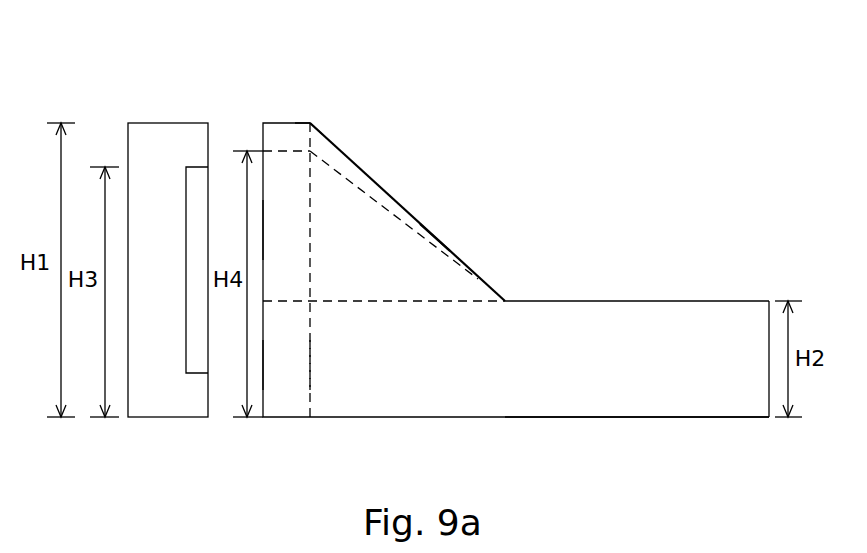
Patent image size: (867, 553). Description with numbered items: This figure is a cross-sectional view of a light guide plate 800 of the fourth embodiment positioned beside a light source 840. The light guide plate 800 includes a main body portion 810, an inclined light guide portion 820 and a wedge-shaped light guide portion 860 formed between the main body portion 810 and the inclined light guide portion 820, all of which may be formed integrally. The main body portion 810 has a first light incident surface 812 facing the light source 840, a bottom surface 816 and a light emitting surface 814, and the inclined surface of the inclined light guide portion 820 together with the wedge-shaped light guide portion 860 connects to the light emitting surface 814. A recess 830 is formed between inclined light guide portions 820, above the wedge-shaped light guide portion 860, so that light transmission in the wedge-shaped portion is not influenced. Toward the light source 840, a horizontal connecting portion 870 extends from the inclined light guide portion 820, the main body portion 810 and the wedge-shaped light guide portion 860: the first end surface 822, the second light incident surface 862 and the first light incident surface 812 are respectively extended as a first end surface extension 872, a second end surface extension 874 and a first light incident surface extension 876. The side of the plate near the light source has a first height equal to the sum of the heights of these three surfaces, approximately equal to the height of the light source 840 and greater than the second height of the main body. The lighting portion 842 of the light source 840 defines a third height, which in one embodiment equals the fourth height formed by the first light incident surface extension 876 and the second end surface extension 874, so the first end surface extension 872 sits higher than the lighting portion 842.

The light guide plate 800 is at (733, 198).
The main body portion 810 is at (750, 283).
The first light incident surface 812 is at (310, 363).
The light emitting surface 814 is at (613, 301).
The bottom surface 816 is at (618, 417).
The inclined light guide portion 820 is at (353, 158).
The first end surface 822 is at (308, 130).
The recess 830 is at (458, 240).
The light source 840 is at (168, 112).
The lighting portion 842 is at (186, 192).
The wedge-shaped light guide portion 860 is at (385, 260).
The second light incident surface 862 is at (310, 213).
The horizontal connecting portion 870 is at (289, 108).
The first end surface extension 872 is at (263, 147).
The second end surface extension 874 is at (263, 232).
The first light incident surface extension 876 is at (263, 363).